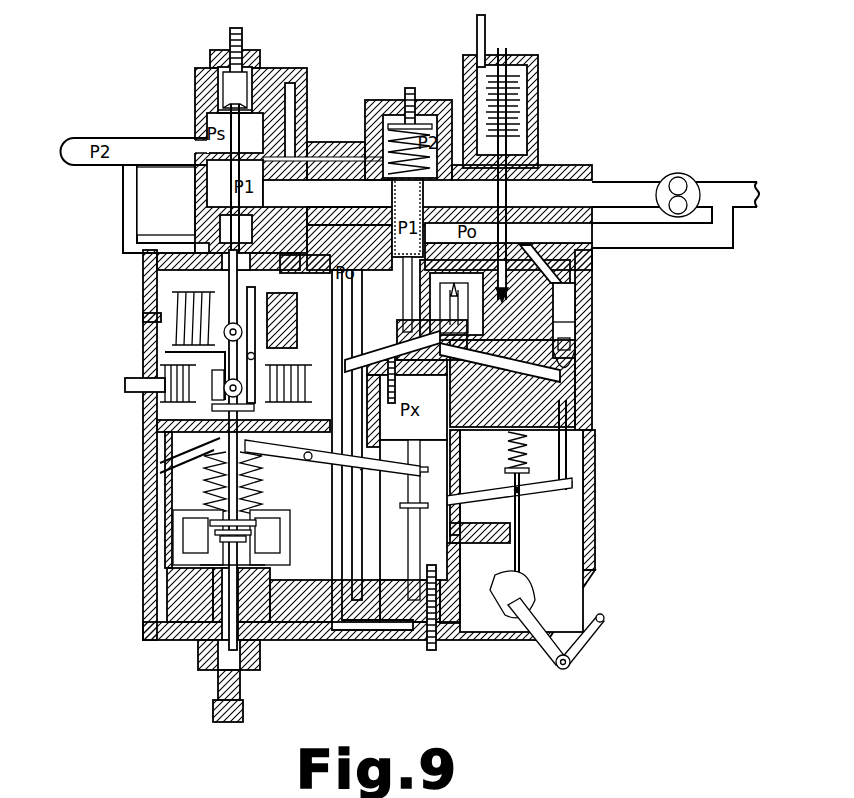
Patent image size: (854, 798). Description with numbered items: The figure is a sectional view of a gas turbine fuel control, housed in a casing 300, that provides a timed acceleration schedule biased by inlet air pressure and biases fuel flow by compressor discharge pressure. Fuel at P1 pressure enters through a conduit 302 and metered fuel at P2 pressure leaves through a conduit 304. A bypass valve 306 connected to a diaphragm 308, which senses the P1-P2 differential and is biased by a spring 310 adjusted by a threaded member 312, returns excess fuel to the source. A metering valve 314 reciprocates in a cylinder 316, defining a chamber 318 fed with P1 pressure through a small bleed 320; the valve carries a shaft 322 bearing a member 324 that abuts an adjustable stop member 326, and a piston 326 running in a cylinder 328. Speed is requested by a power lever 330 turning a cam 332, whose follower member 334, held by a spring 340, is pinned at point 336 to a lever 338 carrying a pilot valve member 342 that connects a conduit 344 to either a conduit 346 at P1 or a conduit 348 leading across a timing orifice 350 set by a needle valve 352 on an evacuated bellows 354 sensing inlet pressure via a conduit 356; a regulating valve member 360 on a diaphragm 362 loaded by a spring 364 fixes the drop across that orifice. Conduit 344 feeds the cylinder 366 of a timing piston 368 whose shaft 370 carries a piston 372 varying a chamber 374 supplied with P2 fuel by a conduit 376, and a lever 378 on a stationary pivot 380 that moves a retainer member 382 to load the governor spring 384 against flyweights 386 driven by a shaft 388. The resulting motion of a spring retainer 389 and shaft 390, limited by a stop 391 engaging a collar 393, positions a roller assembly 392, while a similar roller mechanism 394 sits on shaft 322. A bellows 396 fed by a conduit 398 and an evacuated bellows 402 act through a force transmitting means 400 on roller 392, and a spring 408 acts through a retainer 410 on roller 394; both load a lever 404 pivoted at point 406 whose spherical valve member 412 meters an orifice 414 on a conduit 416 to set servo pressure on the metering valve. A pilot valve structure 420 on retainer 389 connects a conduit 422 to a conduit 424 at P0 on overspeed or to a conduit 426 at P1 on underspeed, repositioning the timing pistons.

The casing 300 is at (592, 497).
The conduit 302 is at (710, 188).
The conduit 304 is at (78, 138).
The bypass valve 306 is at (388, 190).
The diaphragm 308 is at (383, 140).
The spring 310 is at (382, 125).
The member 312 is at (411, 85).
The metering valve 314 is at (207, 140).
The cylinder 316 is at (200, 186).
The chamber 318 is at (198, 84).
The bleed 320 is at (290, 80).
The shaft 322 is at (232, 192).
The member 324 is at (238, 60).
The stop member 326 is at (225, 106).
The cylinder 328 is at (195, 264).
The power lever 330 is at (575, 655).
The cam 332 is at (573, 598).
The follower member 334 is at (512, 570).
The pin point 336 is at (583, 524).
The lever 338 is at (422, 532).
The spring 340 is at (512, 452).
The pilot valve member 342 is at (566, 375).
The conduit 344 is at (572, 353).
The conduit 346 is at (560, 398).
The conduit 348 is at (575, 325).
The timing orifice 350 is at (565, 290).
The needle valve 352 is at (590, 262).
The evacuated bellows 354 is at (522, 100).
The conduit 356 is at (482, 42).
The regulating valve member 360 is at (462, 300).
The diaphragm 362 is at (430, 340).
The spring 364 is at (455, 290).
The cylinder 366 is at (421, 380).
The timing piston 368 is at (440, 432).
The shaft 370 is at (420, 480).
The piston 372 is at (424, 542).
The chamber 374 is at (393, 600).
The conduit 376 is at (403, 632).
The lever 378 is at (365, 472).
The stationary pivot 380 is at (308, 460).
The retainer member 382 is at (256, 460).
The governor spring 384 is at (245, 490).
The flyweights 386 is at (292, 520).
The shaft 388 is at (240, 695).
The spring retainer 389 is at (228, 523).
The shaft 390 is at (228, 490).
The stop 391 is at (165, 438).
The roller assembly 392 is at (225, 365).
The collar 393 is at (172, 456).
The roller mechanism 394 is at (225, 354).
The bellows 396 is at (200, 386).
The conduit 398 is at (128, 384).
The force transmitting means 400 is at (210, 405).
The evacuated bellows 402 is at (290, 402).
The lever 404 is at (298, 320).
The pivot point 406 is at (255, 347).
The spring 408 is at (150, 317).
The spring retainer and force transmitting member 410 is at (190, 291).
The spherical valve member 412 is at (249, 299).
The orifice 414 is at (300, 302).
The conduit 416 is at (300, 277).
The pilot valve structure 420 is at (215, 650).
The conduit 422 is at (325, 564).
The conduit 424 is at (267, 566).
The conduit 426 is at (156, 607).